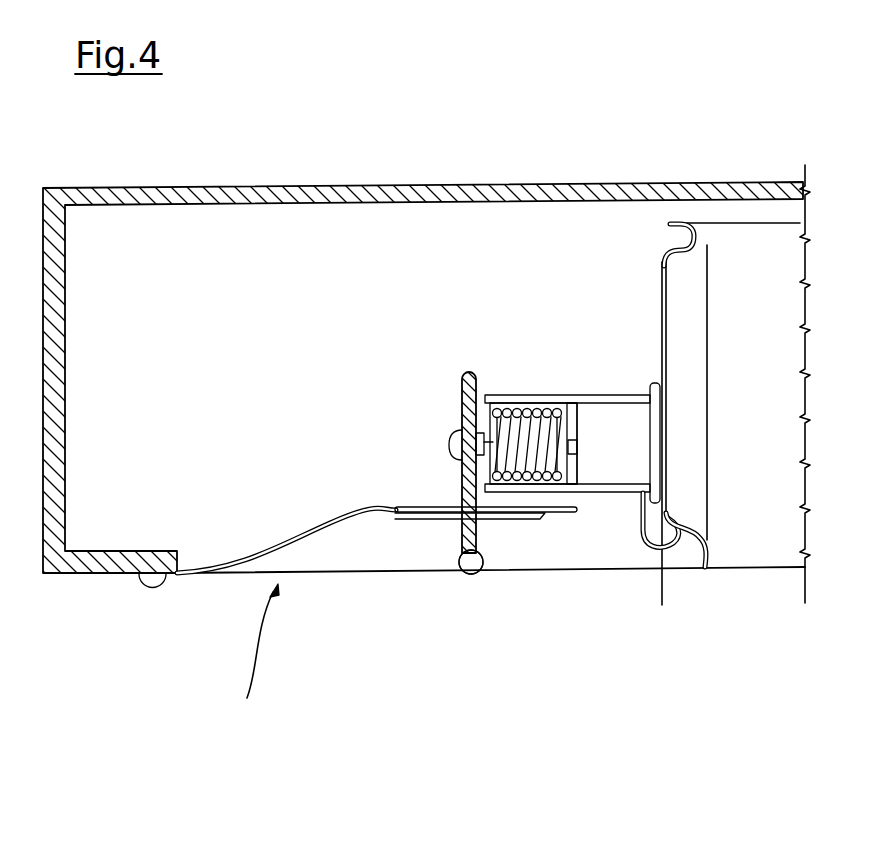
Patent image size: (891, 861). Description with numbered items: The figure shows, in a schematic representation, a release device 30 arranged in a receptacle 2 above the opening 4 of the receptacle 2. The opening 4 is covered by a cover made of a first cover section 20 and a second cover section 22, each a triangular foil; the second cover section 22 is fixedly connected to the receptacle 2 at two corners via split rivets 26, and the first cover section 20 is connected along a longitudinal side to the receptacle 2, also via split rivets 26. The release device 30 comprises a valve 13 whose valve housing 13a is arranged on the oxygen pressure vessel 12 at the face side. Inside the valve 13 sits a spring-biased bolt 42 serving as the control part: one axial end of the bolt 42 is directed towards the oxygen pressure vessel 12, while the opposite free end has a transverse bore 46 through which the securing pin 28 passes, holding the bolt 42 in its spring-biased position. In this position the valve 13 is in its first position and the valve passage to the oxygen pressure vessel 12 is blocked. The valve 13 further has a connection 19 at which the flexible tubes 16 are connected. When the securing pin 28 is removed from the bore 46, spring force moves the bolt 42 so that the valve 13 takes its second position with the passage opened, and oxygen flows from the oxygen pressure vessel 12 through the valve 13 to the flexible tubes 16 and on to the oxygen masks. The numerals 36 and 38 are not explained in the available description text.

The receptacle 2 is at (144, 288).
The opening 4 is at (253, 652).
The oxygen pressure vessel 12 is at (695, 280).
The valve 13 is at (663, 413).
The valve housing 13a is at (598, 398).
The flexible tubes 16 is at (650, 545).
The connection 19 is at (667, 513).
The first cover section 20 is at (218, 575).
The second cover section 22 is at (563, 511).
The split rivets 26 is at (153, 586).
The securing pin 28 is at (463, 478).
The release device 30 is at (389, 445).
The pivot 36 is at (452, 583).
The bearing 38 is at (471, 562).
The bolt 42 is at (523, 410).
The transverse bore 46 is at (480, 392).